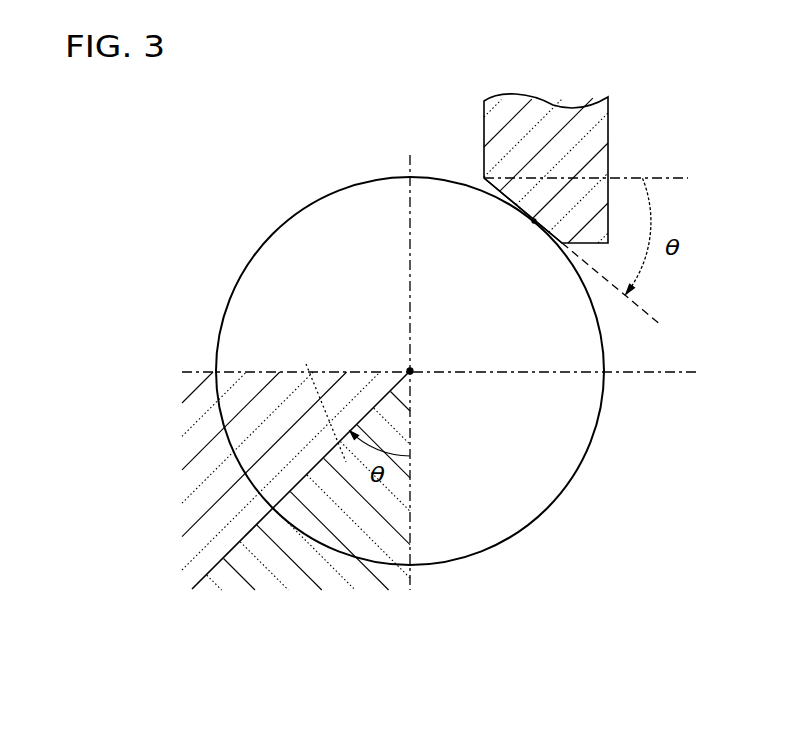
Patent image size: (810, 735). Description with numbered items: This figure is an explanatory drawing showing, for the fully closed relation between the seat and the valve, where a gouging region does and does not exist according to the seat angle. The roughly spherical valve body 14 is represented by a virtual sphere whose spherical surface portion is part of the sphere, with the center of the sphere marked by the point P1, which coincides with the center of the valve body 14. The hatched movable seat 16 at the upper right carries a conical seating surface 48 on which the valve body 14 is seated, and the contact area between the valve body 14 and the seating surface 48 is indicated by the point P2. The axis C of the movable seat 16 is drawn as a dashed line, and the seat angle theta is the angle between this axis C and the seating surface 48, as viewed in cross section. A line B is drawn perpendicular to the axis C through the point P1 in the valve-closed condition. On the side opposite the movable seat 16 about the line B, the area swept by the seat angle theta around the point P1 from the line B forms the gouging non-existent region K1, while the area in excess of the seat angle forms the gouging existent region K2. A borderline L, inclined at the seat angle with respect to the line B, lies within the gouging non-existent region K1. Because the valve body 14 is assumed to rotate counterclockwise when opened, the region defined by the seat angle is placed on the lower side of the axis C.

The movable seat 16 is at (598, 144).
The seating surface 48 is at (550, 234).
The valve body 14 is at (571, 487).
The center of the sphere P1 is at (413, 368).
The area of contact P2 is at (532, 221).
The gouging non-existent region K1 is at (328, 577).
The gouging existent region K2 is at (205, 503).
The borderline L is at (323, 400).
The line B is at (415, 462).
The axis C is at (677, 372).